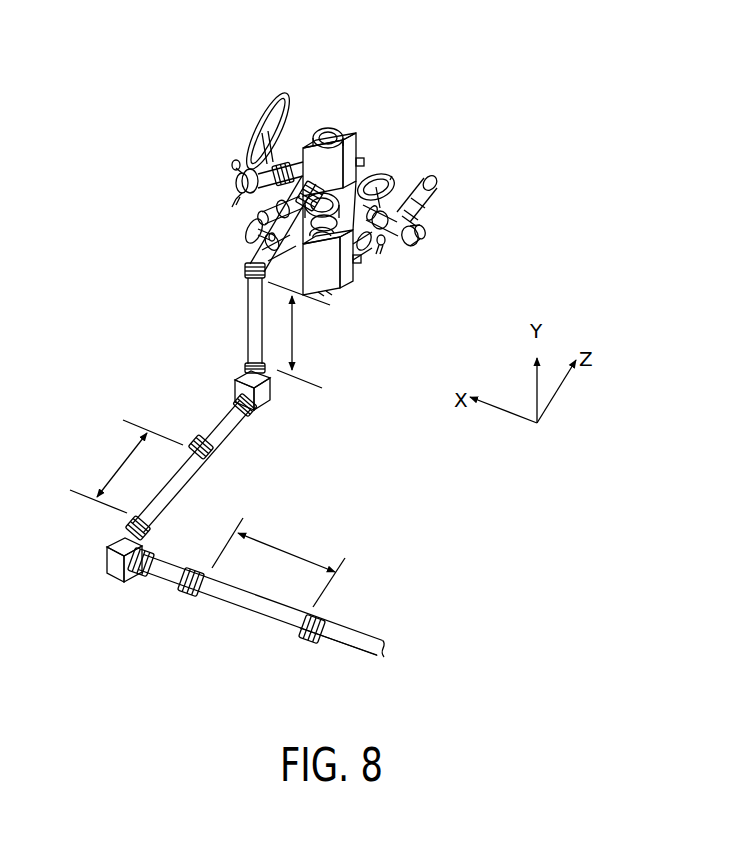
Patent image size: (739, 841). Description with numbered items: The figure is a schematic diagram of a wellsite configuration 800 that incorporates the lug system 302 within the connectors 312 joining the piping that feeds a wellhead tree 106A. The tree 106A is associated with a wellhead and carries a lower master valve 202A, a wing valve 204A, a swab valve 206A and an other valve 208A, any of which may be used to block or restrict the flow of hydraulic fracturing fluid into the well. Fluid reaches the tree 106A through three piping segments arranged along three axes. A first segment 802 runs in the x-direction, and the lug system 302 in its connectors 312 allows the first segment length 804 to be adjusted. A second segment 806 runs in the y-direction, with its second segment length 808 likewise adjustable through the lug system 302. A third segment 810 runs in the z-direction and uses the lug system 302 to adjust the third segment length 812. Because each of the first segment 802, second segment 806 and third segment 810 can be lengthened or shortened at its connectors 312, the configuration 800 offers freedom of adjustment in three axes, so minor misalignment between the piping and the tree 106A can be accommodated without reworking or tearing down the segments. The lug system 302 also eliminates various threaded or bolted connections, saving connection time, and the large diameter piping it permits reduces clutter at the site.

The wellsite configuration 800 is at (508, 204).
The tree 106A is at (308, 104).
The swab valve 206A is at (350, 131).
The wing valve 204A is at (392, 183).
The other valve 208A is at (222, 221).
The lower master valve 202A is at (338, 276).
The second segment 806 is at (247, 318).
The second segment length 808 is at (293, 332).
The third segment 810 is at (187, 477).
The third segment length 812 is at (120, 462).
The first segment 802 is at (242, 602).
The first segment length 804 is at (285, 553).
The lug system 302 is at (341, 607).
The connector 312 is at (310, 644).